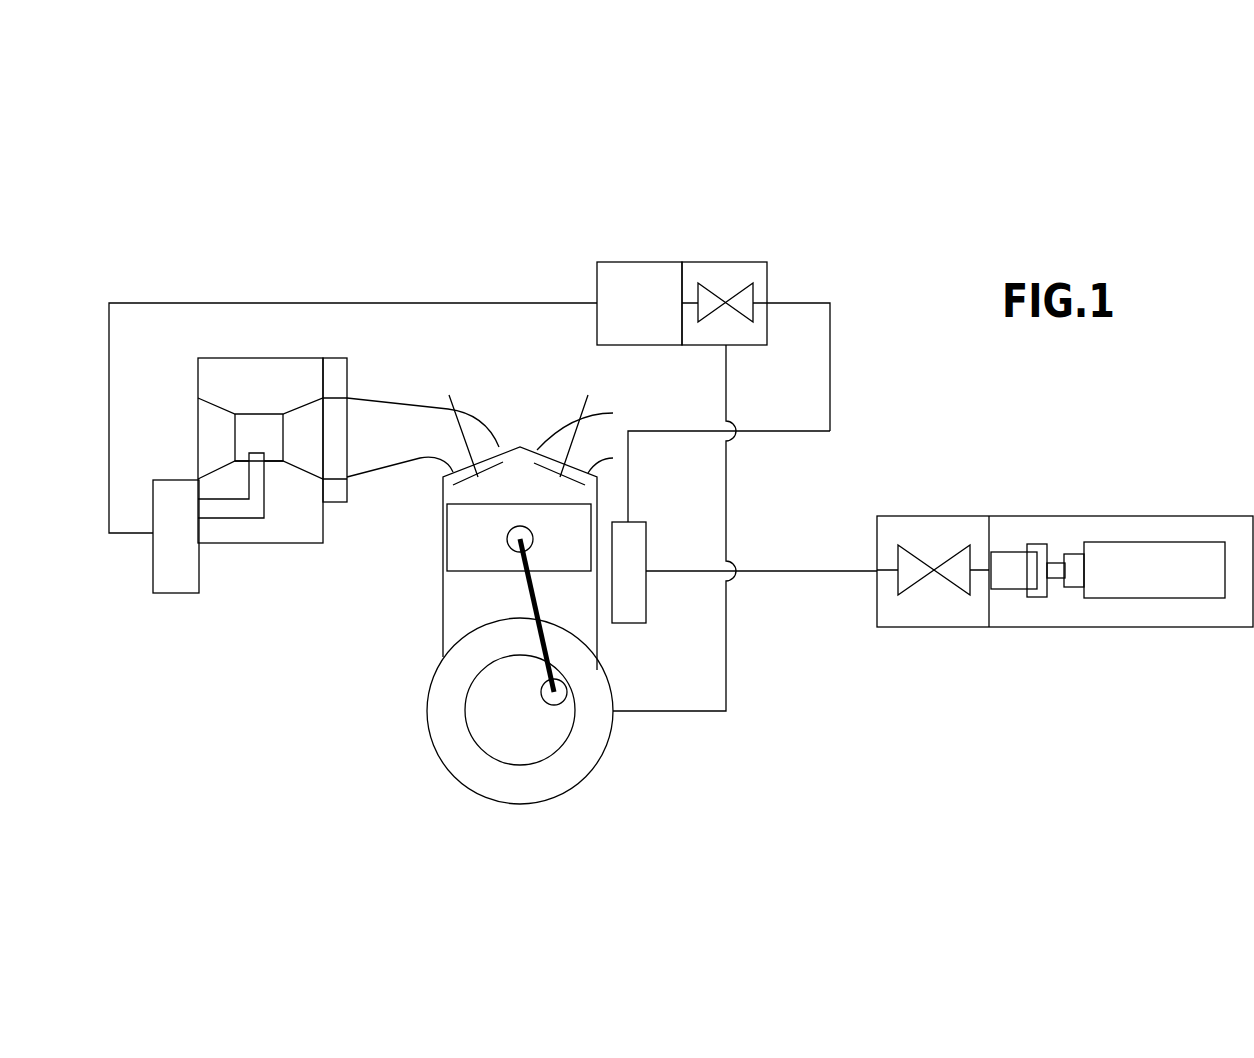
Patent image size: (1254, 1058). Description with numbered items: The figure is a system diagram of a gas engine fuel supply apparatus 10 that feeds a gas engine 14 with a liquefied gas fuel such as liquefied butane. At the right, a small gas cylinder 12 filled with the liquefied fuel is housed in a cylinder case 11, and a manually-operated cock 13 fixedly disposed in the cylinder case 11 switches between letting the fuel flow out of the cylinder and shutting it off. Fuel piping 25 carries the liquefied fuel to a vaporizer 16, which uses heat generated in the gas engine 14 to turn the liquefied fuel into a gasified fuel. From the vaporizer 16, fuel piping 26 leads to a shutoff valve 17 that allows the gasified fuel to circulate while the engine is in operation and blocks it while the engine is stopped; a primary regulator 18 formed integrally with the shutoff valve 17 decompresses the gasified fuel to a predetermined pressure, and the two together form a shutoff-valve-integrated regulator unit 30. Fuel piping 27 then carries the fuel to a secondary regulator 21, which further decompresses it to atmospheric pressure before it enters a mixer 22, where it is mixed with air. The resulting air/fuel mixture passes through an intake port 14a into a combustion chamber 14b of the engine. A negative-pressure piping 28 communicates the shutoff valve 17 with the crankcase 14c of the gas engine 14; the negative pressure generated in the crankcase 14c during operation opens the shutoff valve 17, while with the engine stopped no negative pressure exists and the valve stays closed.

The fuel supply apparatus 10 is at (385, 293).
The cylinder case 11 is at (1065, 578).
The small gas cylinder 12 is at (1139, 560).
The manually-operated cock 13 is at (947, 587).
The gas engine 14 is at (467, 613).
The intake port 14a is at (406, 408).
The combustion chamber 14b is at (466, 494).
The crankcase 14c is at (548, 802).
The vaporizer 16 is at (633, 622).
The shutoff valve 17 is at (724, 256).
The primary regulator 18 is at (635, 275).
The secondary regulator 21 is at (173, 595).
The mixer 22 is at (277, 530).
The fuel piping 25 is at (798, 572).
The fuel piping 26 is at (830, 368).
The fuel piping 27 is at (237, 302).
The negative-pressure piping 28 is at (727, 493).
The shutoff-valve-integrated regulator unit 30 is at (682, 230).